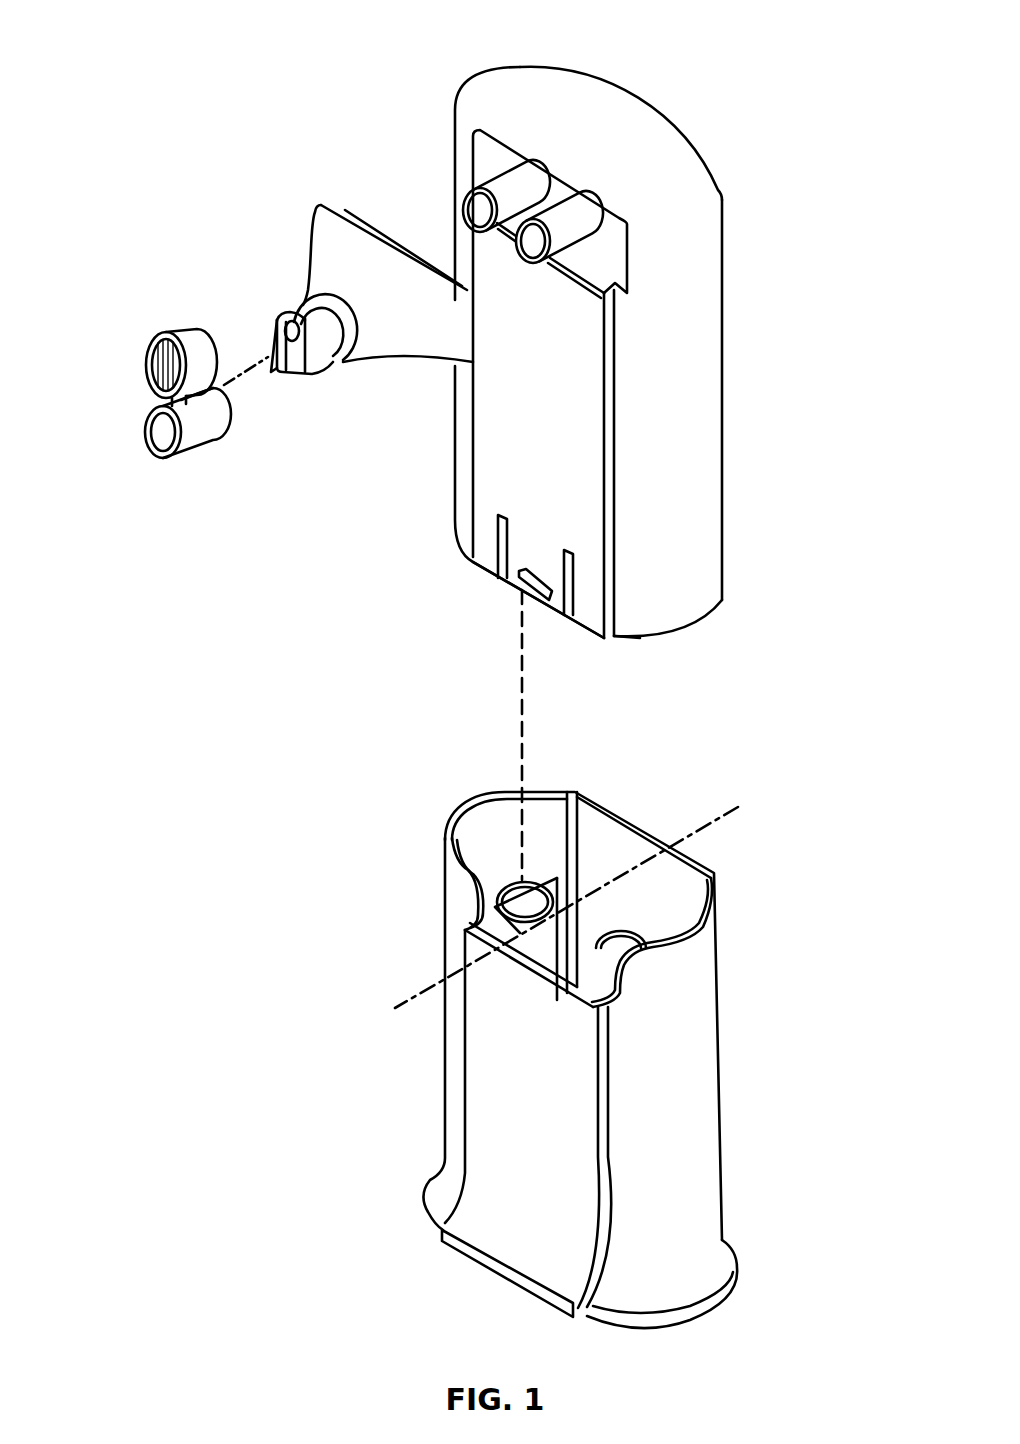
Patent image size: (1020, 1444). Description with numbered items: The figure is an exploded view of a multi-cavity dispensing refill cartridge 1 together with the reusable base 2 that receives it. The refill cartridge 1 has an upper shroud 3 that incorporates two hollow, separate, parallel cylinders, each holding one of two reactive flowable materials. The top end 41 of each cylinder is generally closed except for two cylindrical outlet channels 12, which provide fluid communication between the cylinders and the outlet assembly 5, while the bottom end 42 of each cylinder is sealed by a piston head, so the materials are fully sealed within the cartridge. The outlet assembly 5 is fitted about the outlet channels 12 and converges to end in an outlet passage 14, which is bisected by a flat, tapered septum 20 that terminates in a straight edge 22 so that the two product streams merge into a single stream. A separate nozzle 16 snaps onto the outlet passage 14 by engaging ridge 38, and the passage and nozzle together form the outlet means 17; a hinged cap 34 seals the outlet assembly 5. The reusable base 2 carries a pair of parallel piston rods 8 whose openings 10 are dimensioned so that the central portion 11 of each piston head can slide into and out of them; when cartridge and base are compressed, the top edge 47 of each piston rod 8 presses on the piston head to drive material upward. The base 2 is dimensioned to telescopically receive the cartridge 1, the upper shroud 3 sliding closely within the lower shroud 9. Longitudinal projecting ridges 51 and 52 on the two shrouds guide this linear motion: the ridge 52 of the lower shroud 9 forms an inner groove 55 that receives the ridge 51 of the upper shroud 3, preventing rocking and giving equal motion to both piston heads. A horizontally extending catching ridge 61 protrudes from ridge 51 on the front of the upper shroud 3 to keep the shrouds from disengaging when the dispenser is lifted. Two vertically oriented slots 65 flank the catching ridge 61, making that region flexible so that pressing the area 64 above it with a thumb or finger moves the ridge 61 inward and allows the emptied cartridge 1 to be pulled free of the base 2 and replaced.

The multi-cavity dispensing refill cartridge 1 is at (448, 111).
The reusable base 2 is at (734, 940).
The upper shroud 3 is at (712, 423).
The outlet assembly 5 is at (322, 235).
The piston rods 8 is at (545, 941).
The lower shroud 9 is at (455, 1090).
The openings 10 is at (510, 887).
The central portion of piston head 11 is at (738, 807).
The cylindrical outlet channels 12 is at (573, 197).
The outlet passage 14 is at (337, 365).
The nozzle 16 is at (201, 436).
The outlet means 17 is at (223, 433).
The septum 20 is at (287, 350).
The septum edge 22 is at (267, 372).
The hinged cap 34 is at (150, 345).
The ridge 38 is at (303, 310).
The top end of cylinder 41 is at (522, 92).
The bottom end of cylinder 42 is at (483, 571).
The top edge of piston rod 47 is at (560, 898).
The longitudinal projecting ridge of upper shroud 51 is at (604, 358).
The longitudinal projecting ridge of lower shroud 52 is at (603, 1157).
The inner groove 55 is at (530, 942).
The catching ridge 61 is at (534, 595).
The press area 64 is at (542, 535).
The vertically oriented slots 65 is at (507, 581).